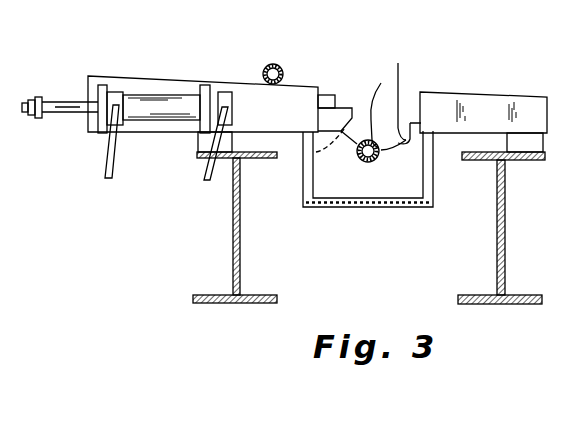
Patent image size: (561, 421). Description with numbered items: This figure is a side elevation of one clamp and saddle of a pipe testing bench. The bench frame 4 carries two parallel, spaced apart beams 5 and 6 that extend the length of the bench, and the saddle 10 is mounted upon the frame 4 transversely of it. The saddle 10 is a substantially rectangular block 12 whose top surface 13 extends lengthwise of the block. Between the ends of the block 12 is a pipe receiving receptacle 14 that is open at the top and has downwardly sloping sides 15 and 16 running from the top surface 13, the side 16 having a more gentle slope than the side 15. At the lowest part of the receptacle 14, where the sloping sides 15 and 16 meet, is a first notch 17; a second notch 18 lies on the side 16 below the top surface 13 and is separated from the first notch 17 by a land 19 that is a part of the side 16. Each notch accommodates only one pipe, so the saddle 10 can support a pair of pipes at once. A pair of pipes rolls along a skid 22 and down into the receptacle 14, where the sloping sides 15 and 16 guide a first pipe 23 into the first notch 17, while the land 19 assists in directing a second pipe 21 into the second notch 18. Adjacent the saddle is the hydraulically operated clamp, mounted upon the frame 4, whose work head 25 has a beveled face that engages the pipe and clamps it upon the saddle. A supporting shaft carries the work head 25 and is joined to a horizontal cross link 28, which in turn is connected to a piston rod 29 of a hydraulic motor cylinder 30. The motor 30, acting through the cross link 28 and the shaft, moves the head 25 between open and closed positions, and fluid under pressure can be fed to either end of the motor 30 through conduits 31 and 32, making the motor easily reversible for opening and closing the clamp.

The frame 4 is at (510, 255).
The beam 5 is at (242, 247).
The beam 6 is at (505, 215).
The saddle 10 is at (408, 211).
The rectangular block 12 is at (372, 194).
The top surface 13 is at (404, 123).
The pipe receiving receptacle 14 is at (389, 130).
The downwardly sloping side 15 is at (359, 140).
The downwardly sloping side 16 is at (403, 92).
The first notch 17 is at (375, 162).
The second notch 18 is at (397, 145).
The land 19 is at (386, 102).
The second pipe 21 is at (276, 63).
The skid 22 is at (184, 80).
The first pipe 23 is at (357, 148).
The work head 25 is at (331, 107).
The horizontal cross link 28 is at (40, 88).
The piston rod 29 is at (68, 113).
The hydraulic motor cylinder 30 is at (165, 122).
The conduit 31 is at (110, 163).
The conduit 32 is at (207, 172).